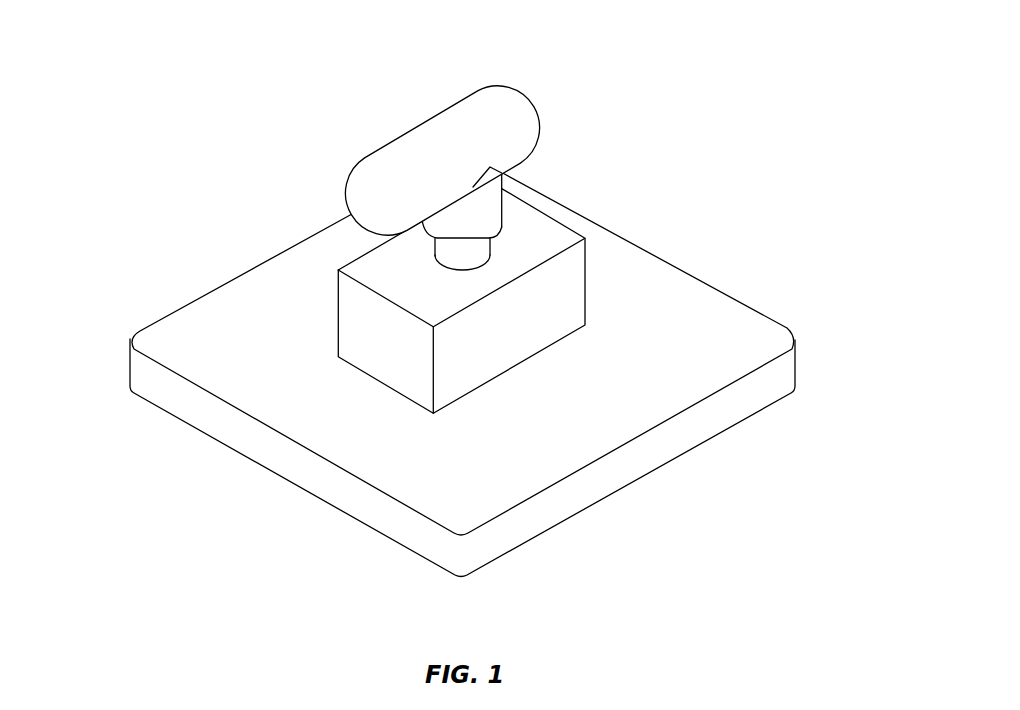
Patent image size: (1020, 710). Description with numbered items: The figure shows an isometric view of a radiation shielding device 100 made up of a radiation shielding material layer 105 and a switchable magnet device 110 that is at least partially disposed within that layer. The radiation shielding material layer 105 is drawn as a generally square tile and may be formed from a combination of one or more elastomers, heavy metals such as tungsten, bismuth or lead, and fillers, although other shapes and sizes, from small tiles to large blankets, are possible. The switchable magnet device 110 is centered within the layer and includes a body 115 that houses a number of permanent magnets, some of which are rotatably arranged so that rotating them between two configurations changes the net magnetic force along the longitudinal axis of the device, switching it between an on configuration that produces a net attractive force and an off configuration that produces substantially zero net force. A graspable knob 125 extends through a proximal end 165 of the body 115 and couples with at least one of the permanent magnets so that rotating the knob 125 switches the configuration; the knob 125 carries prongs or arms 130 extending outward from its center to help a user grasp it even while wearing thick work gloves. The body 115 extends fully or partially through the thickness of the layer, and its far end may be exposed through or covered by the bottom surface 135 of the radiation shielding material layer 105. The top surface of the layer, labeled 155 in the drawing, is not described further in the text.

The radiation shielding device 100 is at (148, 95).
The radiation shielding material layer 105 is at (130, 368).
The switchable magnet device 110 is at (567, 182).
The body 115 is at (587, 275).
The knob 125 is at (435, 116).
The prongs or arms 130 is at (343, 180).
The bottom surface 135 is at (623, 492).
The top surface of base 155 is at (200, 317).
The proximal end 165 is at (533, 222).